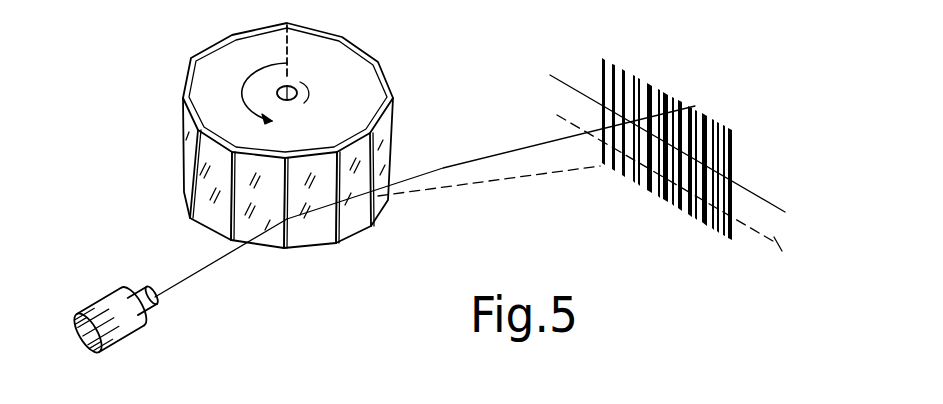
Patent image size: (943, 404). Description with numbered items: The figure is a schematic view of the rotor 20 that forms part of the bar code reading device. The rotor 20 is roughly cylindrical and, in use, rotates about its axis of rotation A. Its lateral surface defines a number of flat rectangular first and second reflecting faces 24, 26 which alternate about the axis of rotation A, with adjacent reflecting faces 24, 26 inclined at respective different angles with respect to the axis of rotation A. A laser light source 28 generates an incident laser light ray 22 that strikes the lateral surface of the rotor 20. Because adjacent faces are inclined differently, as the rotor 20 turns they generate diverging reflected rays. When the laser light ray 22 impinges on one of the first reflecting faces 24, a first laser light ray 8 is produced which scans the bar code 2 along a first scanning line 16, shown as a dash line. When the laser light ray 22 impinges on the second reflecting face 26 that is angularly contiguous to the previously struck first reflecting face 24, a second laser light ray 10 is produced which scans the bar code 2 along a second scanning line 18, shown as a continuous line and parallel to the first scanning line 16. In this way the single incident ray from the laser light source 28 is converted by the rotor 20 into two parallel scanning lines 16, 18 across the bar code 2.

The bar code 2 is at (706, 106).
The first laser light ray 8 is at (455, 186).
The second laser light ray 10 is at (443, 168).
The first scanning line 16 is at (766, 245).
The second scanning line 18 is at (780, 210).
The rotor 20 is at (176, 85).
The laser light ray 22 is at (175, 285).
The first reflecting faces 24 is at (270, 240).
The second reflecting faces 26 is at (305, 247).
The laser light source 28 is at (105, 310).
The axis of rotation A is at (283, 252).